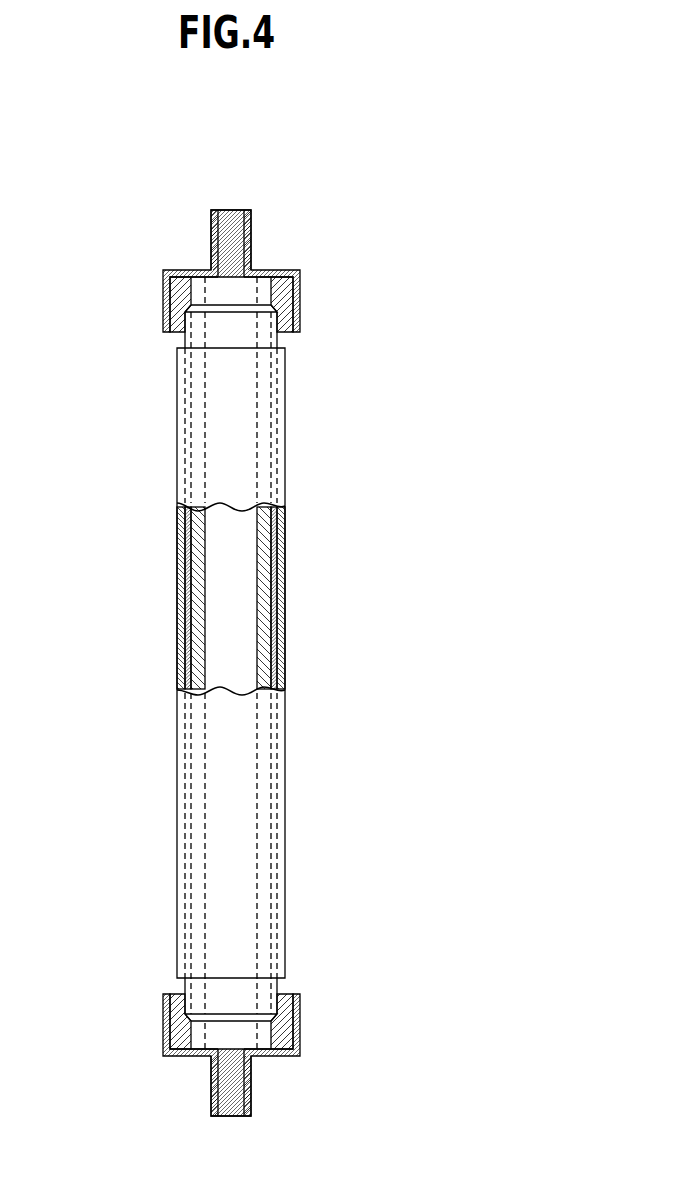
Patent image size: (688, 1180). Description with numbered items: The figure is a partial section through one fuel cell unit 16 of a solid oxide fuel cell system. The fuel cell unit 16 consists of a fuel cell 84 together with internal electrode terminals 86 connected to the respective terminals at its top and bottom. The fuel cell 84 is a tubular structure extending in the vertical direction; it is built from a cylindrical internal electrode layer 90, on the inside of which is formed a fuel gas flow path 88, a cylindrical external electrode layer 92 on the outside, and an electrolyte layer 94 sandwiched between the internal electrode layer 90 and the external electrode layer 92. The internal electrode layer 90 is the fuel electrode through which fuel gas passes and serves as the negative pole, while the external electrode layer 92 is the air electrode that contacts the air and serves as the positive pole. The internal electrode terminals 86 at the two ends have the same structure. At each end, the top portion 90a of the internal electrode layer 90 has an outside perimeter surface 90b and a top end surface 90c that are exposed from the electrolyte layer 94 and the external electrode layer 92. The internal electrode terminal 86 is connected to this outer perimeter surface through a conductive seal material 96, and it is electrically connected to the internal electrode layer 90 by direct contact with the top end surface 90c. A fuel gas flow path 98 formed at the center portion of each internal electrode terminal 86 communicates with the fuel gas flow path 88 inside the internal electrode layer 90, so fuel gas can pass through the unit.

The fuel cell unit 16 is at (358, 393).
The fuel cell 84 is at (286, 476).
The internal electrode terminal 86 is at (300, 281).
The fuel gas flow path 88 is at (215, 609).
The internal electrode layer 90 is at (266, 532).
The top portion 90a is at (326, 673).
The outside perimeter surface 90b is at (273, 289).
The top end surface 90c is at (267, 272).
The external electrode layer 92 is at (281, 607).
The electrolyte layer 94 is at (275, 562).
The conductive seal material 96 is at (178, 298).
The fuel gas flow path 98 is at (231, 224).